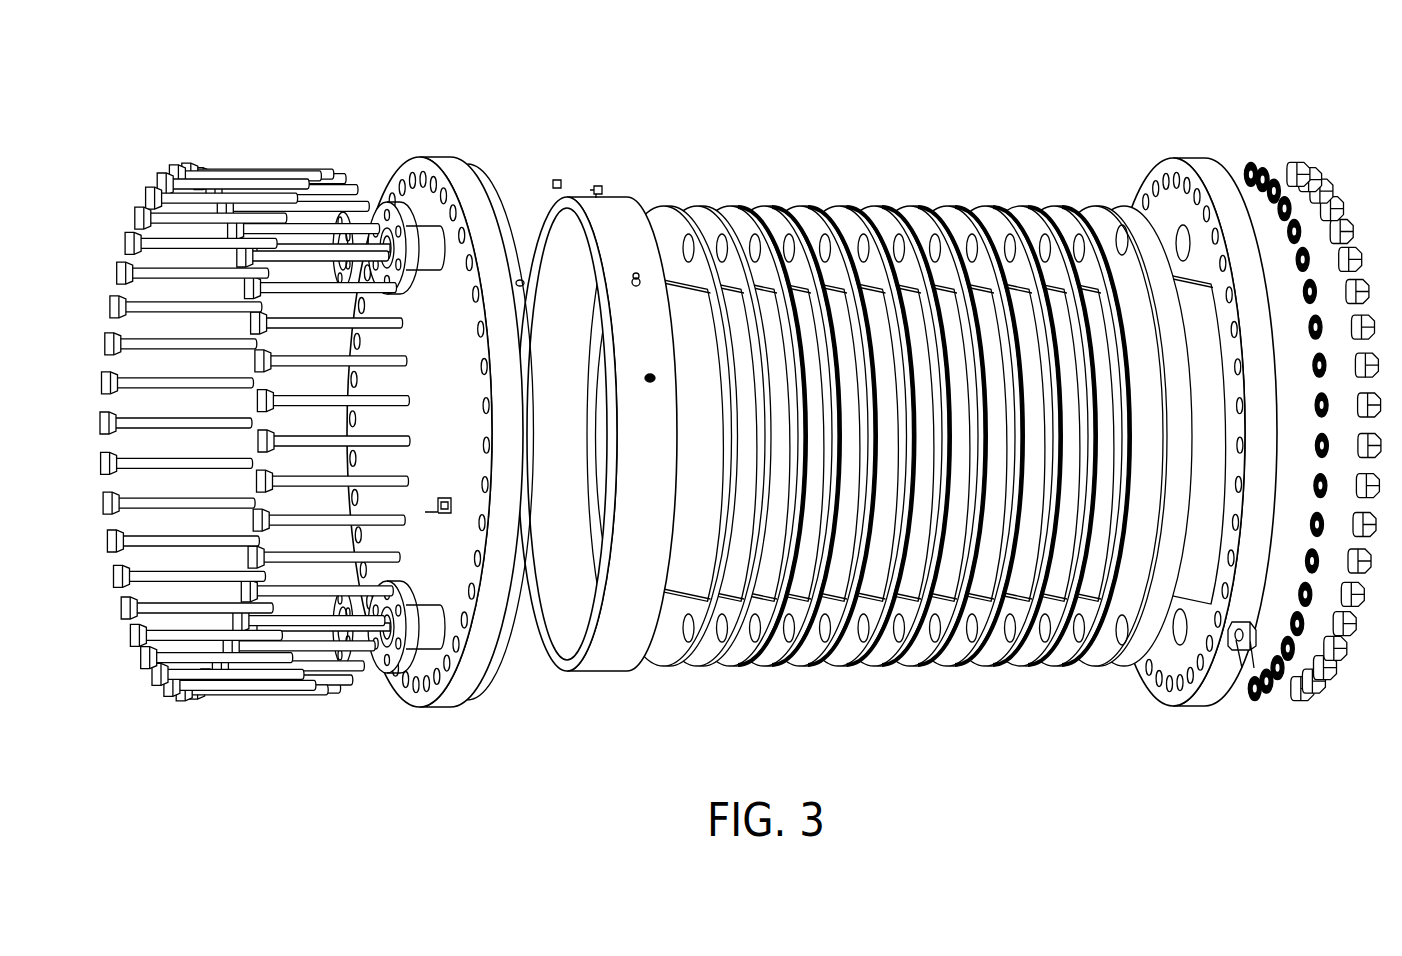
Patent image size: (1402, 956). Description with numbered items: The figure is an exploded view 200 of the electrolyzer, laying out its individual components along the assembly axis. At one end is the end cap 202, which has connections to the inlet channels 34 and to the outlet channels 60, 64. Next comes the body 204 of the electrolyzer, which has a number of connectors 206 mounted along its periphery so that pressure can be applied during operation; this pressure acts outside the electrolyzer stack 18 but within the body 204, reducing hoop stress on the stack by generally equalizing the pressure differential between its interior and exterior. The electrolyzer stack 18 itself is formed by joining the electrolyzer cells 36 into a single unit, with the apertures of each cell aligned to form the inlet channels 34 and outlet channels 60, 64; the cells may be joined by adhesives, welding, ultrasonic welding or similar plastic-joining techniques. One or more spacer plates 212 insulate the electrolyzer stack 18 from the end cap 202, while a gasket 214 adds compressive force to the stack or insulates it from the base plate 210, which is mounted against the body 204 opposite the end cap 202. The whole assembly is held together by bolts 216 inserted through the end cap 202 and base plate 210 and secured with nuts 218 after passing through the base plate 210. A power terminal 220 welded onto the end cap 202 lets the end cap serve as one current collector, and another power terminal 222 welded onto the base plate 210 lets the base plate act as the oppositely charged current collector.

The exploded view 200 is at (312, 92).
The bolts 216 is at (190, 152).
The inlet channels 34 is at (345, 245).
The outlet channel 64 is at (400, 166).
The end cap 202 is at (418, 158).
The outlet channel 60 is at (403, 655).
The power terminal 220 is at (448, 516).
The body 204 is at (580, 188).
The connectors 206 is at (602, 186).
The spacer plates 212 is at (705, 203).
The electrolyzer stack 18 is at (1065, 160).
The electrolyzer cells 36 is at (832, 668).
The gasket 214 is at (1108, 210).
The base plate 210 is at (1176, 157).
The power terminal 222 is at (1233, 650).
The nuts 218 is at (1292, 160).